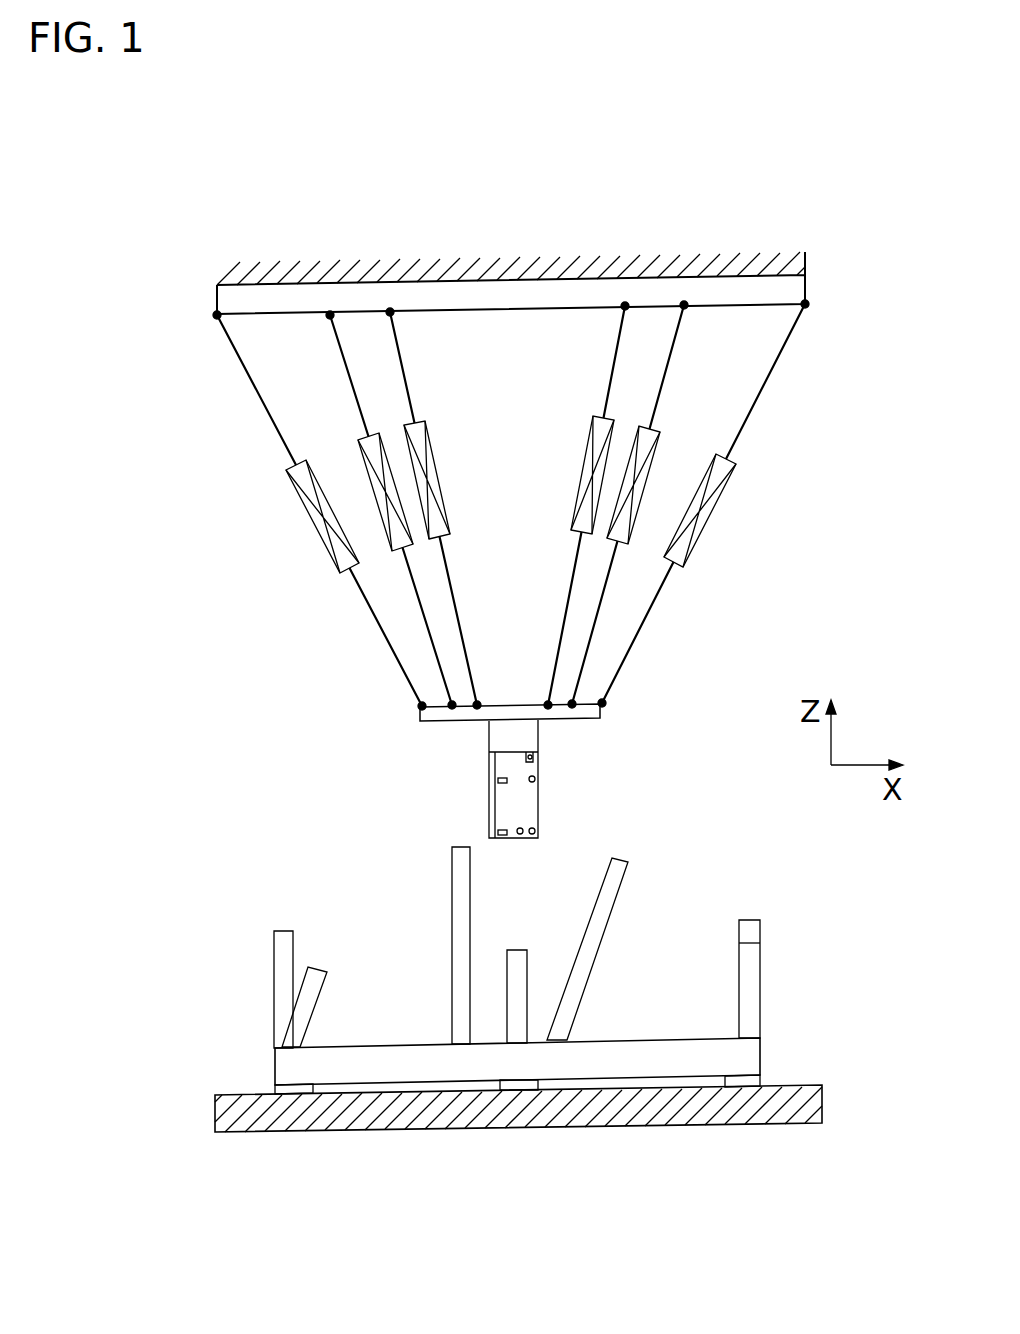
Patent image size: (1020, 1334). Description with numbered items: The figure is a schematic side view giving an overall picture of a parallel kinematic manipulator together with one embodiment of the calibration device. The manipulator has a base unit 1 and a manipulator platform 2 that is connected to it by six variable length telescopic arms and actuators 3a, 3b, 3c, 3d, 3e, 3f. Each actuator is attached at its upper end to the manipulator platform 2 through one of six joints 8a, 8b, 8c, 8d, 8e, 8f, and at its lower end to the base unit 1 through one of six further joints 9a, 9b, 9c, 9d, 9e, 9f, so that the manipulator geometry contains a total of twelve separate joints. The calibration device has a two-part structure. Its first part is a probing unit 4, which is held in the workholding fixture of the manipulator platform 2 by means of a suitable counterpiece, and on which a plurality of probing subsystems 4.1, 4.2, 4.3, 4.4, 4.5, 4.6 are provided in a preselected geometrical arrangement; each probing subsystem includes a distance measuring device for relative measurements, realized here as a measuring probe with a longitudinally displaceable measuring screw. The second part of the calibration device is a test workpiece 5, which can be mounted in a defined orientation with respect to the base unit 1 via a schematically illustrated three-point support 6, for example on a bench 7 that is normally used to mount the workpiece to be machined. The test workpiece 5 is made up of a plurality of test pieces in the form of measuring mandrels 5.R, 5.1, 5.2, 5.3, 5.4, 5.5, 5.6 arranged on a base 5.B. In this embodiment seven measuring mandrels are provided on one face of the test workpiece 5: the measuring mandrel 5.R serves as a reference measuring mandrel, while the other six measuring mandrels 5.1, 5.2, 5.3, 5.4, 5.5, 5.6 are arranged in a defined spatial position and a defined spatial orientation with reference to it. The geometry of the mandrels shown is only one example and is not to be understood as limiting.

The base unit 1 is at (770, 298).
The manipulator platform 2 is at (425, 719).
The variable length telescopic arm and actuator 3a is at (280, 435).
The variable length telescopic arm and actuator 3b is at (360, 412).
The variable length telescopic arm and actuator 3c is at (410, 400).
The variable length telescopic arm and actuator 3d is at (608, 392).
The variable length telescopic arm and actuator 3e is at (663, 380).
The variable length telescopic arm and actuator 3f is at (749, 415).
The probing unit 4 is at (475, 770).
The probing subsystem 4.1 is at (498, 781).
The probing subsystem 4.2 is at (498, 832).
The probing subsystem 4.3 is at (522, 829).
The probing subsystem 4.4 is at (536, 832).
The probing subsystem 4.5 is at (536, 779).
The probing subsystem 4.6 is at (538, 750).
The test workpiece 5 is at (530, 966).
The measuring mandrel 5.1 is at (283, 932).
The measuring mandrel 5.2 is at (757, 920).
The measuring mandrel 5.3 is at (462, 895).
The measuring mandrel 5.4 is at (320, 968).
The measuring mandrel 5.5 is at (750, 978).
The measuring mandrel 5.6 is at (593, 950).
The reference measuring mandrel 5.R is at (513, 952).
The base 5.B is at (743, 1055).
The three-point support 6 is at (740, 1088).
The bench 7 is at (812, 1105).
The joint 8a is at (217, 316).
The joint 8b is at (330, 316).
The joint 8c is at (390, 312).
The joint 8d is at (625, 306).
The joint 8e is at (684, 305).
The joint 8f is at (805, 304).
The joint 9a is at (422, 706).
The joint 9b is at (452, 705).
The joint 9c is at (477, 705).
The joint 9d is at (548, 705).
The joint 9e is at (572, 704).
The joint 9f is at (602, 703).